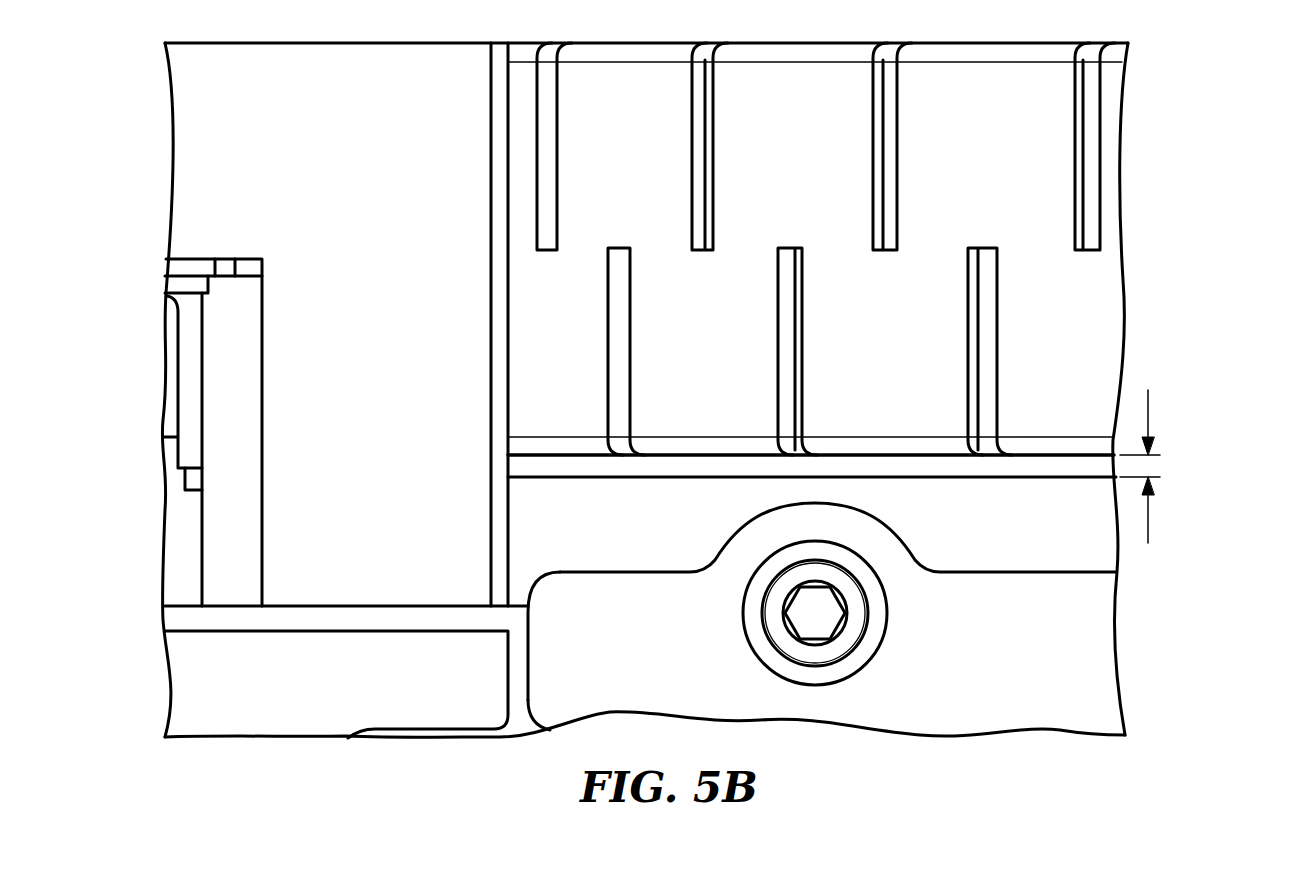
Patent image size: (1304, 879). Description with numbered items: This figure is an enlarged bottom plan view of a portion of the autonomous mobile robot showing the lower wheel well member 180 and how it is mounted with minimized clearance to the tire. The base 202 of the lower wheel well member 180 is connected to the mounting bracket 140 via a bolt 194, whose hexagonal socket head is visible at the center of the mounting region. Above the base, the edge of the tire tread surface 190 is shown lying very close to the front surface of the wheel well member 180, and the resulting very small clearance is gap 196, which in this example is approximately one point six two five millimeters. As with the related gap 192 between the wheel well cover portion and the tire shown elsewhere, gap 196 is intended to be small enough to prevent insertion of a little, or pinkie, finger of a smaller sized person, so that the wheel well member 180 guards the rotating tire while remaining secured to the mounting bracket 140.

The gap 192 is at (497, 122).
The tread surface 190 is at (815, 249).
The gap 196 is at (1074, 469).
The base 202 is at (838, 537).
The lower wheel well member 180 is at (1083, 534).
The bolt 194 is at (830, 613).
The mounting bracket 140 is at (645, 655).